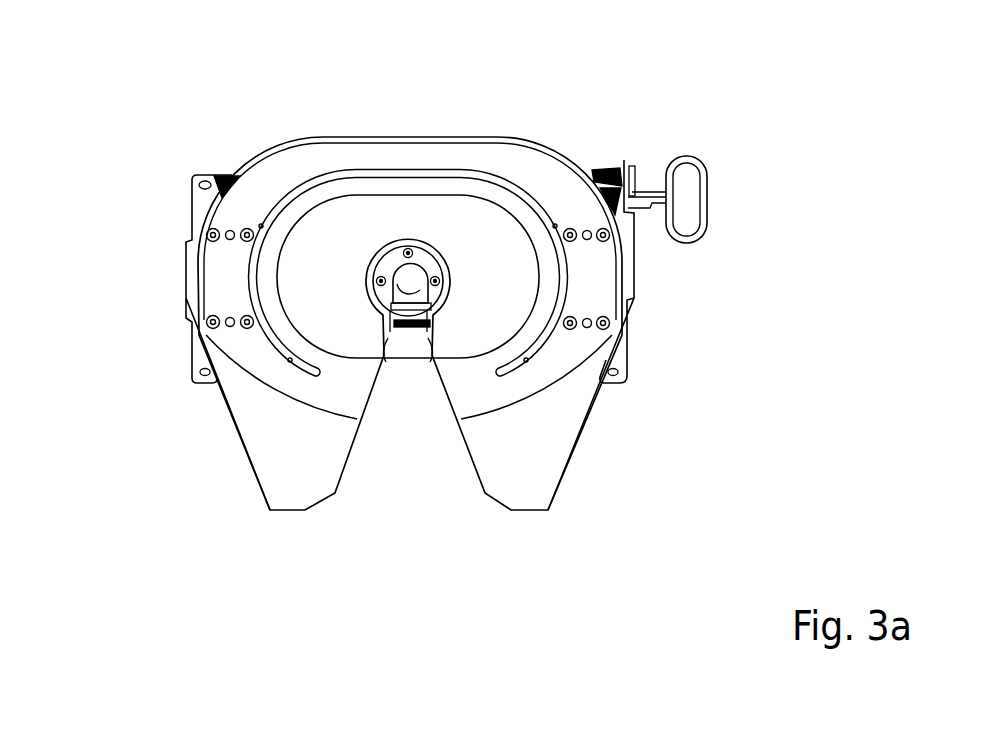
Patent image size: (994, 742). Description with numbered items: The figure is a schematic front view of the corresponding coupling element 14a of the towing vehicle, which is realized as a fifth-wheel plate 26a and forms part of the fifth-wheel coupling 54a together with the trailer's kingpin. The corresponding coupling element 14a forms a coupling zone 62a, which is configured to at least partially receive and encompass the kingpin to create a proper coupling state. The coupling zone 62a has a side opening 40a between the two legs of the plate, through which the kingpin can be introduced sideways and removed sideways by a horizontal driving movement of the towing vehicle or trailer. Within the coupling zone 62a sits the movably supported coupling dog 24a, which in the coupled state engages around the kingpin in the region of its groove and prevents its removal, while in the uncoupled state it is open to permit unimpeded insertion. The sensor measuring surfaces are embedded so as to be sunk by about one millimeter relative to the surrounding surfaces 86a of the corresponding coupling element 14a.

The corresponding coupling element 14a is at (210, 437).
The coupling dog 24a is at (405, 312).
The fifth-wheel plate 26a is at (547, 178).
The side opening 40a is at (412, 445).
The fifth-wheel coupling 54a is at (168, 297).
The coupling zone 62a is at (407, 268).
The surrounding surfaces 86a is at (392, 261).